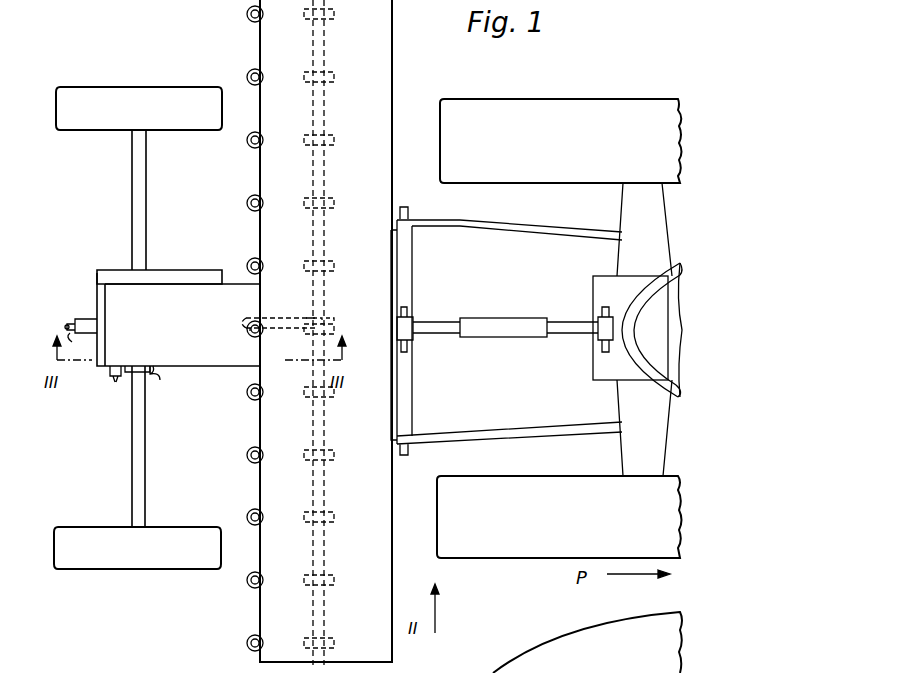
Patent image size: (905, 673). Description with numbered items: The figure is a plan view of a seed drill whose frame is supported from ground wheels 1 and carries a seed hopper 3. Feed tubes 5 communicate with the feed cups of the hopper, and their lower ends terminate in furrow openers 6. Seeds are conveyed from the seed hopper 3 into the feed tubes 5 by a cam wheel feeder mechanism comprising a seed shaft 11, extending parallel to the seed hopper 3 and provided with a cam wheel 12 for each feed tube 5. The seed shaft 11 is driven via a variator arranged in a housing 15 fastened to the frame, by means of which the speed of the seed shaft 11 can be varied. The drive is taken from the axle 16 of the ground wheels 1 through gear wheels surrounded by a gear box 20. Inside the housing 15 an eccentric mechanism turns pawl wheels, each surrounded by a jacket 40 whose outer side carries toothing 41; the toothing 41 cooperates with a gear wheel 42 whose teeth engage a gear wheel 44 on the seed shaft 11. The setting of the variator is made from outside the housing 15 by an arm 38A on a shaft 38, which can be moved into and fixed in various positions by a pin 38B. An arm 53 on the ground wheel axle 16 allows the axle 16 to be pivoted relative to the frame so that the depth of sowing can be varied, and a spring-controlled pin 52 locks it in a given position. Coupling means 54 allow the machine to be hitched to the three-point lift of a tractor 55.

The ground wheels 1 is at (193, 75).
The seed hopper 3 is at (392, 92).
The feed tubes 5 is at (246, 586).
The furrow openers 6 is at (246, 645).
The seed shaft 11 is at (313, 418).
The cam wheel 12 is at (331, 145).
The housing 15 is at (228, 366).
The axle of the ground wheels 16 is at (146, 480).
The gear box 20 is at (176, 284).
The shaft 38 is at (115, 383).
The arm 38A is at (138, 366).
The pin 38B is at (160, 380).
The jacket 40 is at (252, 332).
The toothing 41 is at (240, 323).
The gear wheel 42 is at (316, 318).
The gear wheel 44 is at (332, 318).
The spring-controlled pin 52 is at (74, 344).
The arm 53 is at (90, 305).
The coupling means 54 is at (413, 273).
The tractor 55 is at (578, 476).